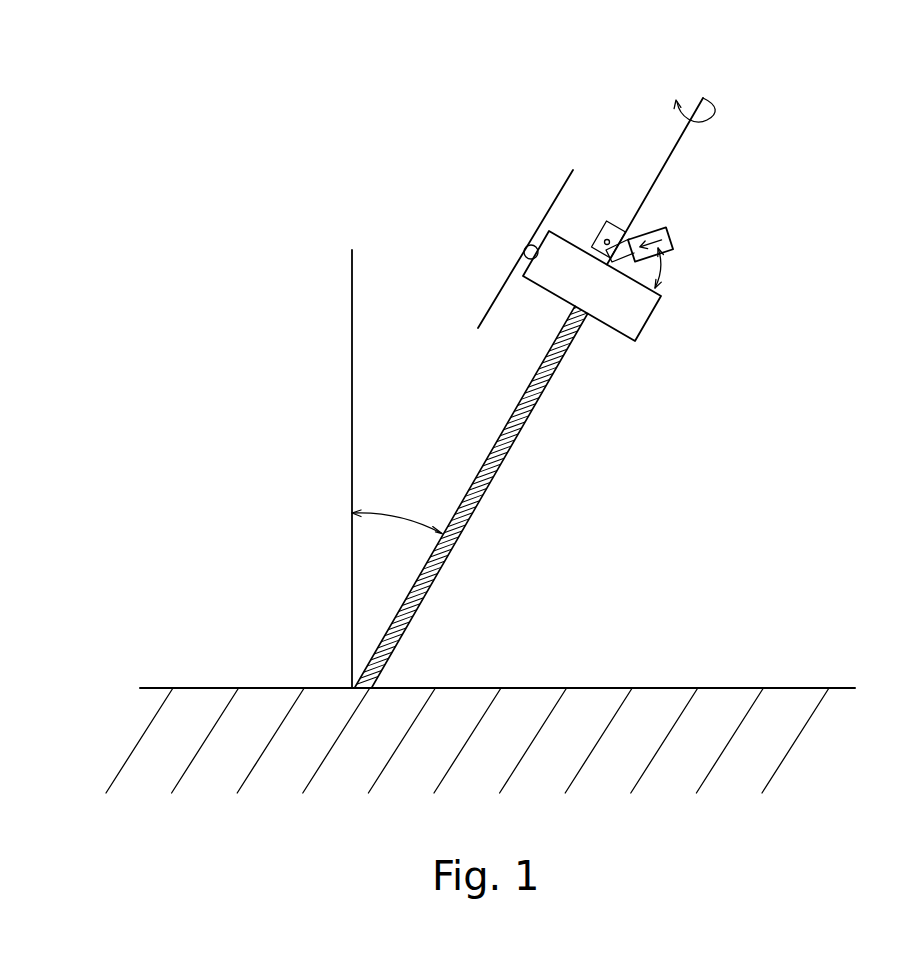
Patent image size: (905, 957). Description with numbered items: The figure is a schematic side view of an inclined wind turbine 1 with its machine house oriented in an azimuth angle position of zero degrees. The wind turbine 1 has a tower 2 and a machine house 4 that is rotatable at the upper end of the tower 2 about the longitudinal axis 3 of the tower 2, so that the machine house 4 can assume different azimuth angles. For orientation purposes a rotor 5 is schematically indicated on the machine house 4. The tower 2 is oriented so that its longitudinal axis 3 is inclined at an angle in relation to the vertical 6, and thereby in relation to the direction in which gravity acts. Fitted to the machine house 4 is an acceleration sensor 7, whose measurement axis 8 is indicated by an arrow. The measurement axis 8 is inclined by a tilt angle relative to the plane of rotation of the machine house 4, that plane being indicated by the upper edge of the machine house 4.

The wind turbine 1 is at (596, 105).
The tower 2 is at (520, 433).
The longitudinal axis 3 is at (678, 143).
The machine house 4 is at (637, 315).
The rotor 5 is at (502, 288).
The vertical 6 is at (351, 425).
The acceleration sensor 7 is at (655, 231).
The measurement axis 8 is at (667, 229).